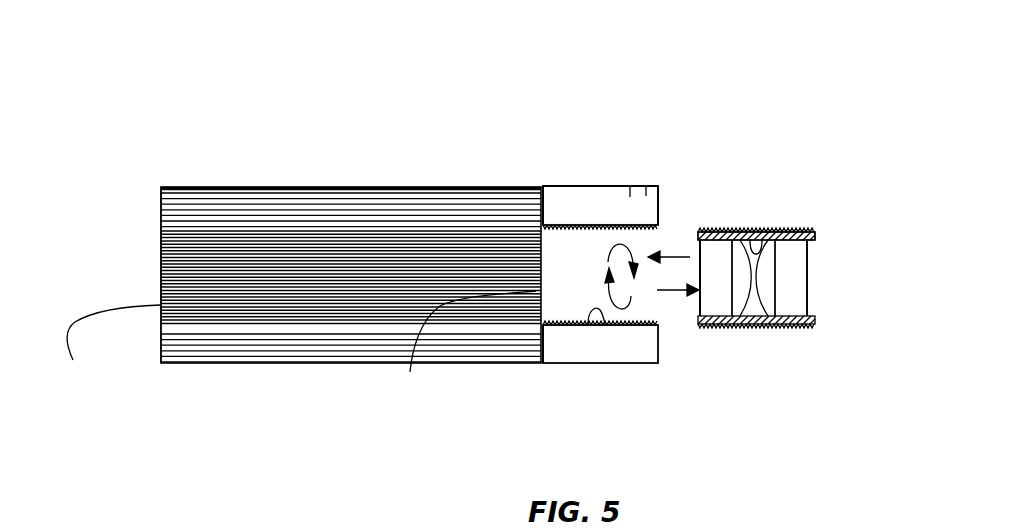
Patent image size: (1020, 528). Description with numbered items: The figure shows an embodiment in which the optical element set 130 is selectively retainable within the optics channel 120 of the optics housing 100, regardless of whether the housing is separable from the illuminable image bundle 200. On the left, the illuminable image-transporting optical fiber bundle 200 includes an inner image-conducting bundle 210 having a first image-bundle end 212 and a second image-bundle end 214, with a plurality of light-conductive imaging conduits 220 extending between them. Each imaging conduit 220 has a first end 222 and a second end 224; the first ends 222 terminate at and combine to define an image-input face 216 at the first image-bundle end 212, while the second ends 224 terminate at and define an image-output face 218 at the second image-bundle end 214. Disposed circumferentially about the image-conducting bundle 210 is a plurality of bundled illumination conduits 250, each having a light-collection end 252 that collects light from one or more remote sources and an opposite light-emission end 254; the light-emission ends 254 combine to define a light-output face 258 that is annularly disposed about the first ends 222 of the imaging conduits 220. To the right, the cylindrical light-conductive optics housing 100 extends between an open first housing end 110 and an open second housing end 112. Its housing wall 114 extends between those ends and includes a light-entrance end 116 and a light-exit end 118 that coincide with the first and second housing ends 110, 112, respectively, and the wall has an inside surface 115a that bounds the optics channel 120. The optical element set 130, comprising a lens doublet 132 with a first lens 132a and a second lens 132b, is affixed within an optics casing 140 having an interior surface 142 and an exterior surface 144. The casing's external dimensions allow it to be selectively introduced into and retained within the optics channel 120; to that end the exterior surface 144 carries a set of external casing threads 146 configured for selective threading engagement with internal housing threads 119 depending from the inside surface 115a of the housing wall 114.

The illuminable image-transporting optical fiber bundle 200 is at (388, 154).
The illumination conduit 250 is at (292, 186).
The light-collection end 252 is at (159, 187).
The light-emission end 254 is at (541, 219).
The light-output face 258 is at (541, 226).
The image-conducting bundle 210 is at (316, 300).
The imaging conduit 220 is at (335, 305).
The second end 224 is at (160, 305).
The image-output face 218 is at (113, 332).
The second image-bundle end 214 is at (160, 293).
The first end 222 is at (536, 291).
The image-input face 216 is at (473, 331).
The first image-bundle end 212 is at (541, 299).
The optics housing 100 is at (580, 195).
The first housing end 110 is at (546, 186).
The light-entrance end 116 is at (541, 186).
The optics channel 120 is at (576, 248).
The housing wall 114 is at (630, 186).
The second housing end 112 is at (646, 186).
The light-exit end 118 is at (658, 203).
The inside surface 115a is at (546, 344).
The internal housing threads 119 is at (592, 326).
The optical element set 130 is at (800, 296).
The lens doublet 132 is at (753, 278).
The first lens 132a is at (788, 280).
The second lens 132b is at (716, 310).
The optics casing 140 is at (818, 230).
The interior surface 142 is at (768, 229).
The exterior surface 144 is at (758, 229).
The external casing threads 146 is at (702, 228).